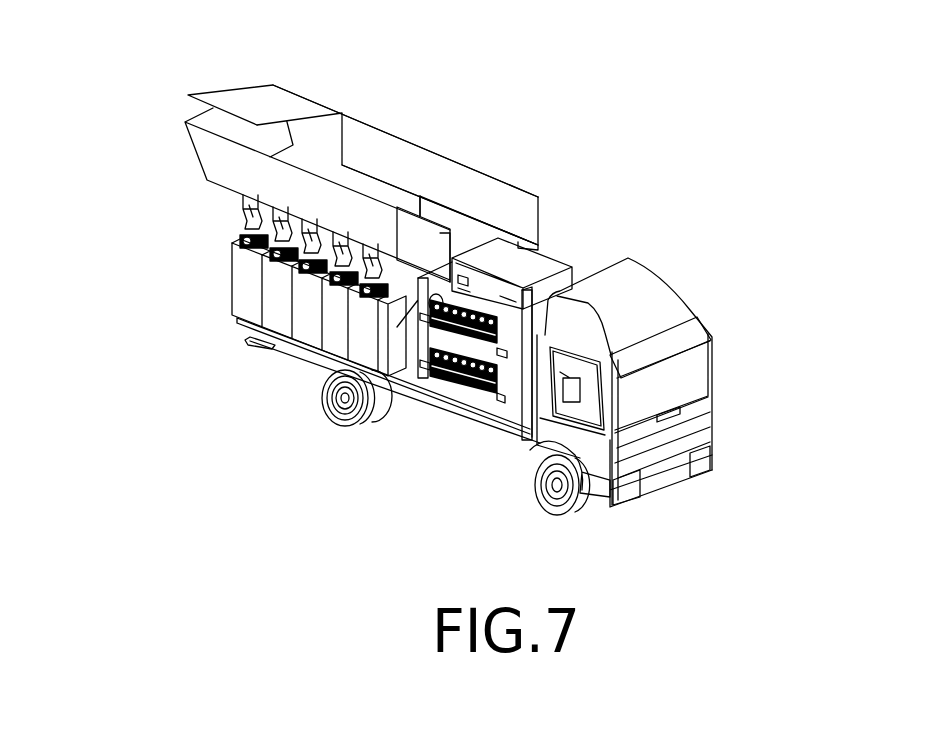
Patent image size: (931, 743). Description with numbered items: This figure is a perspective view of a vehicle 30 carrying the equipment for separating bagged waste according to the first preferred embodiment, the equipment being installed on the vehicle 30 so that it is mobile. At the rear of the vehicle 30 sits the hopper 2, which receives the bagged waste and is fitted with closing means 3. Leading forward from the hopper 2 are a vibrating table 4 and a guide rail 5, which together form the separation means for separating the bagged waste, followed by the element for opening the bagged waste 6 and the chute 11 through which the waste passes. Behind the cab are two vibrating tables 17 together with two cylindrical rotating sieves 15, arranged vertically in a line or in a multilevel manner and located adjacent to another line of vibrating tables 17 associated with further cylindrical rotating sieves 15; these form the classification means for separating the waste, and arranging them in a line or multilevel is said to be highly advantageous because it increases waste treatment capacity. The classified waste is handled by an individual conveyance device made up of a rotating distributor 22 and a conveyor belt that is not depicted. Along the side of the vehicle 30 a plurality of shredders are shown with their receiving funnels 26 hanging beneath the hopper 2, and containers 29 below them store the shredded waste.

The hopper 2 is at (195, 135).
The closing means 3 is at (248, 98).
The vibrating table 4 is at (425, 158).
The guide rail 5 is at (483, 223).
The element for opening the bagged waste 6 is at (535, 262).
The chute 11 is at (510, 370).
The cylindrical rotating sieves 15 is at (422, 352).
The vibrating tables 17 is at (460, 388).
The rotating distributor 22 is at (397, 327).
The receiving funnels 26 is at (307, 237).
The containers 29 is at (273, 303).
The vehicle 30 is at (643, 302).